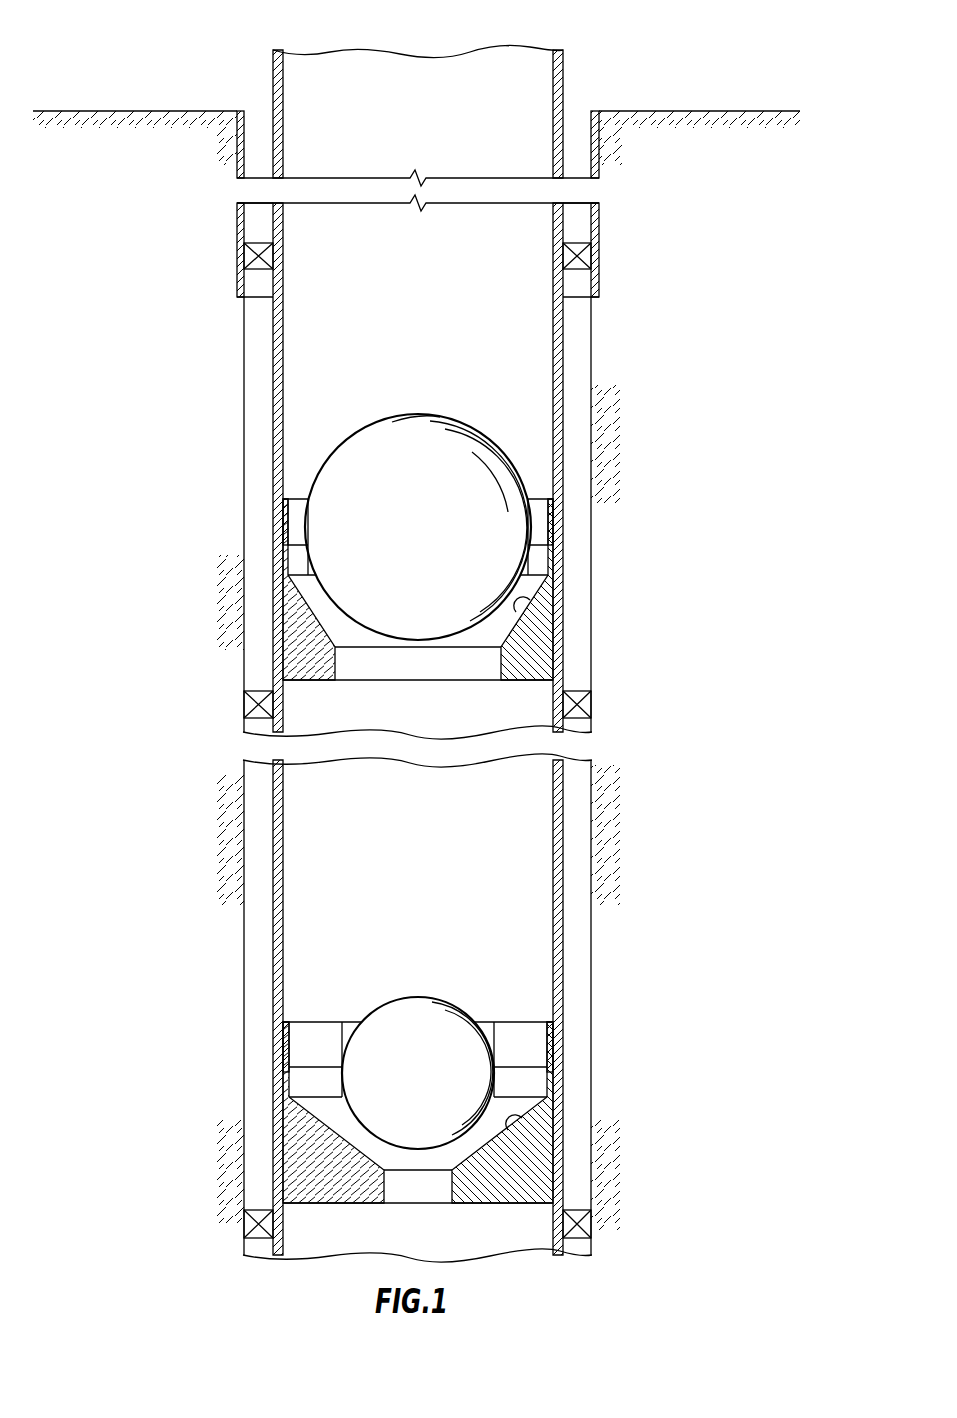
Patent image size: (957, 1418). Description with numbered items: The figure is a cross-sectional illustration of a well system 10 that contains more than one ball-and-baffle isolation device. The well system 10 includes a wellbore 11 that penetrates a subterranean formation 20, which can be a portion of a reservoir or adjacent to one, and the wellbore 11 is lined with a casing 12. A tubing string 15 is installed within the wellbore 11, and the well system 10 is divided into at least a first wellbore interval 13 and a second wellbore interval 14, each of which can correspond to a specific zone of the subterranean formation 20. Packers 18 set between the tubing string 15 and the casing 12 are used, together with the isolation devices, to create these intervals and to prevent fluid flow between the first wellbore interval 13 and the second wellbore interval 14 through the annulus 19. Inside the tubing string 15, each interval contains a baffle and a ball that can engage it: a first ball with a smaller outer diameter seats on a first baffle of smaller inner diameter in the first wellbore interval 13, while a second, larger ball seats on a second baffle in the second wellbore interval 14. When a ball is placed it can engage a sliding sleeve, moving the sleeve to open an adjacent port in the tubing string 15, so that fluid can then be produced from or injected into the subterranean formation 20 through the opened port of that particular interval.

The well system 10 is at (96, 66).
The wellbore 11 is at (592, 343).
The casing 12 is at (600, 218).
The first wellbore interval 13 is at (415, 1056).
The second wellbore interval 14 is at (427, 547).
The tubing string 15 is at (273, 852).
The packer 18 is at (245, 257).
The annulus 19 is at (578, 978).
The subterranean formation 20 is at (745, 424).